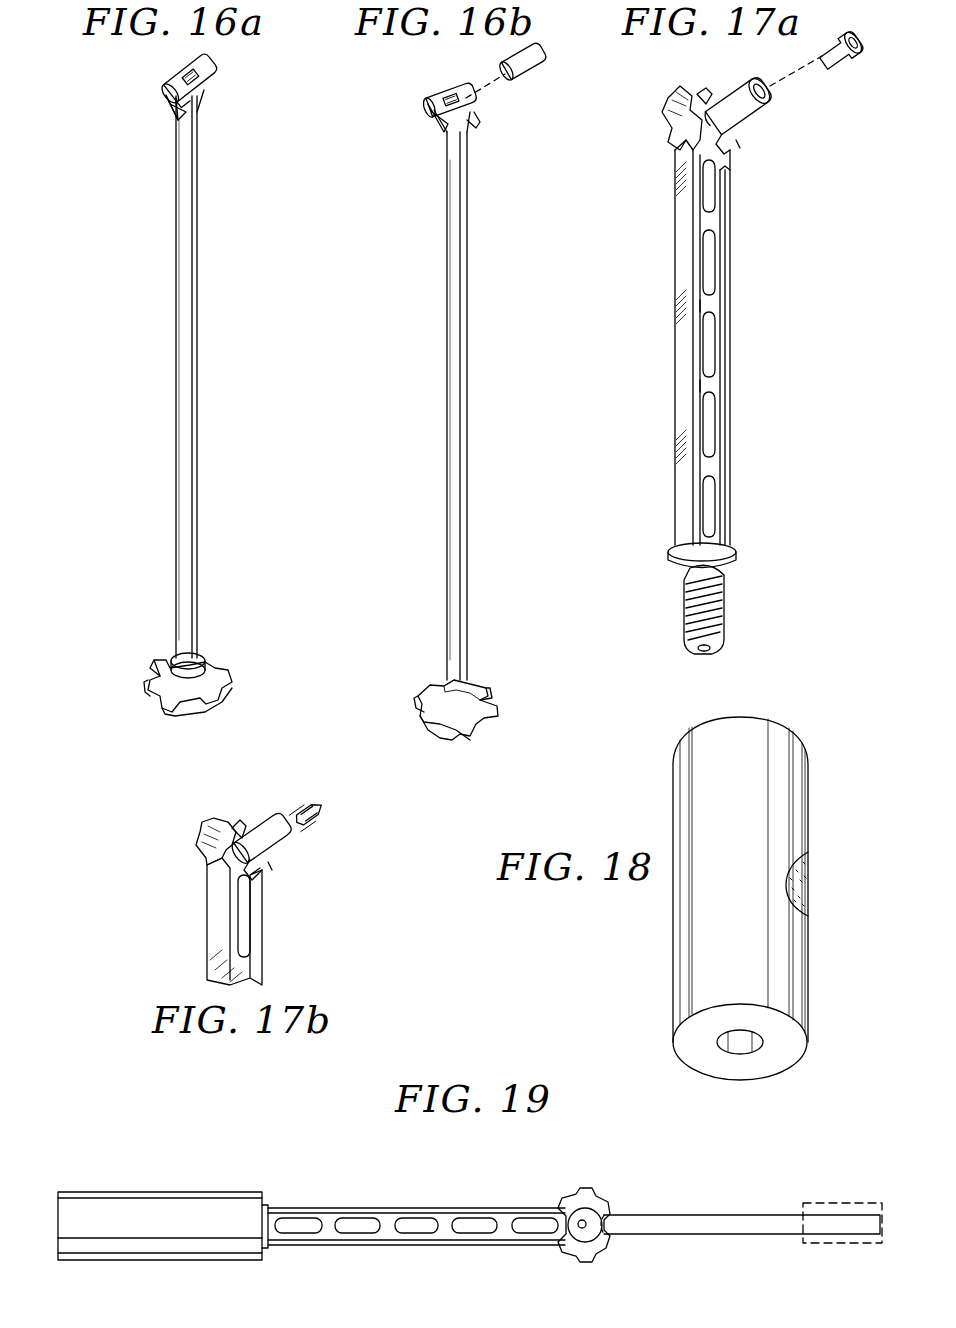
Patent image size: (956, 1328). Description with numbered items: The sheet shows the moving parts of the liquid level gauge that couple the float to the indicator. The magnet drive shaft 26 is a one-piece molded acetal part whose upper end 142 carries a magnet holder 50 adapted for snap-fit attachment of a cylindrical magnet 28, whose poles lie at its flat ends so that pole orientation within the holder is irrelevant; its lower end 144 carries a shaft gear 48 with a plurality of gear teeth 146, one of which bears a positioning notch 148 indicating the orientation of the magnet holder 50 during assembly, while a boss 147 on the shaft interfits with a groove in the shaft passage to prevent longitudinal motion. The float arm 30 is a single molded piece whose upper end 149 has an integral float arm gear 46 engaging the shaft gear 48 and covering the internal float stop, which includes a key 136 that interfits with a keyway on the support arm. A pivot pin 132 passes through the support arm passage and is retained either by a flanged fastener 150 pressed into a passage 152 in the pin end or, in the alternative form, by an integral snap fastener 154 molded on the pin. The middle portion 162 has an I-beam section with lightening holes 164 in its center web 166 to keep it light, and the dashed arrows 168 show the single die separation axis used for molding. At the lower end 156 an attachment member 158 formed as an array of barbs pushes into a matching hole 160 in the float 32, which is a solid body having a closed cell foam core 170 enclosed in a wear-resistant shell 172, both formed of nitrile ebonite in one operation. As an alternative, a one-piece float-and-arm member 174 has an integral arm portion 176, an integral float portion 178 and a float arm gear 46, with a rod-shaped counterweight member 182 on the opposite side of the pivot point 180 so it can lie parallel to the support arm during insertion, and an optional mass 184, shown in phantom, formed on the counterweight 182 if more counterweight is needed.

In FIG. 16a, the magnet drive shaft 26 is at (176, 340).
In FIG. 16b, the magnet drive shaft 26 is at (447, 262).
In FIG. 16b, the magnet 28 is at (522, 82).
In FIG. 17a, the float arm 30 is at (676, 352).
In FIG. 17b, the float arm 30 is at (212, 924).
In FIG. 18, the float 32 is at (822, 814).
In FIG. 17a, the float arm gear 46 is at (668, 100).
In FIG. 17b, the float arm gear 46 is at (200, 832).
In FIG. 19, the float arm gear 46 is at (588, 1194).
In FIG. 16a, the shaft gear 48 is at (218, 690).
In FIG. 16b, the shaft gear 48 is at (455, 722).
In FIG. 16a, the magnet holder 50 is at (210, 68).
In FIG. 16b, the magnet holder 50 is at (432, 95).
In FIG. 17a, the pivot pin 132 is at (748, 124).
In FIG. 17b, the pivot pin 132 is at (282, 862).
In FIG. 17a, the key 136 is at (706, 92).
In FIG. 17b, the key 136 is at (238, 826).
In FIG. 16a, the upper end 142 is at (150, 80).
In FIG. 16b, the upper end 142 is at (415, 108).
In FIG. 16a, the lower end 144 is at (240, 592).
In FIG. 16b, the lower end 144 is at (520, 612).
In FIG. 16a, the gear teeth 146 is at (148, 680).
In FIG. 16b, the gear teeth 146 is at (420, 684).
In FIG. 16a, the boss 147 is at (200, 653).
In FIG. 16a, the positioning notch 148 is at (150, 658).
In FIG. 16b, the positioning notch 148 is at (494, 682).
In FIG. 17a, the upper end 149 is at (660, 138).
In FIG. 17a, the flanged fastener 150 is at (856, 64).
In FIG. 17a, the passage 152 is at (768, 92).
In FIG. 17b, the integral snap fastener 154 is at (306, 836).
In FIG. 17a, the lower end 156 is at (786, 568).
In FIG. 17a, the attachment member 158 is at (722, 596).
In FIG. 18, the hole 160 is at (750, 1052).
In FIG. 17a, the middle portion 162 is at (792, 322).
In FIG. 17a, the lightening holes 164 is at (714, 290).
In FIG. 17a, the center web 166 is at (720, 388).
In FIG. 17a, the die separation axis direction 168 is at (668, 492).
In FIG. 18, the core 170 is at (806, 884).
In FIG. 18, the shell 172 is at (800, 950).
In FIG. 19, the float-and-arm member 174 is at (350, 1166).
In FIG. 19, the arm portion 176 is at (428, 1246).
In FIG. 19, the float portion 178 is at (160, 1192).
In FIG. 19, the pivot point 180 is at (583, 1230).
In FIG. 19, the counterweight member 182 is at (674, 1214).
In FIG. 19, the mass 184 is at (842, 1200).